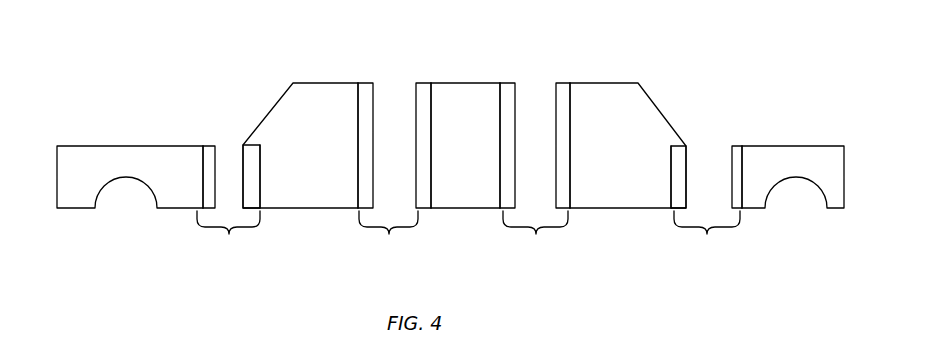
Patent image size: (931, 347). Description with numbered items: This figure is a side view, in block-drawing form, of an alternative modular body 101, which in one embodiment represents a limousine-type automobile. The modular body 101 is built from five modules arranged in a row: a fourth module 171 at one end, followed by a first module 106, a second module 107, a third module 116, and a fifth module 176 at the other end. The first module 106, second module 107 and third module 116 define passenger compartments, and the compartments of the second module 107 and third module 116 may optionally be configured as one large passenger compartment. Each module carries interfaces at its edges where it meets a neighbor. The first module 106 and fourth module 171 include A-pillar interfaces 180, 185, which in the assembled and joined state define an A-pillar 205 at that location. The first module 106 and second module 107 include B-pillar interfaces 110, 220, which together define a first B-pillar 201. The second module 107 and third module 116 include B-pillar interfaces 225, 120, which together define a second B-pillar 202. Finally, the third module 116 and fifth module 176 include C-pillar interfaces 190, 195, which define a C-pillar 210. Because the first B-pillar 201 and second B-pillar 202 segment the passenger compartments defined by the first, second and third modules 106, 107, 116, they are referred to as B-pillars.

The alternative modular body 101 is at (730, 35).
The fourth module 171 is at (137, 135).
The A-pillar interface 185 is at (203, 172).
The first module 106 is at (332, 76).
The B-pillar interface 110 is at (358, 125).
The A-pillar interface 180 is at (262, 170).
The second module 107 is at (464, 76).
The B-pillar interface 220 is at (431, 114).
The B-pillar interface 225 is at (500, 163).
The third module 116 is at (601, 76).
The B-pillar interface 120 is at (570, 128).
The C-pillar interface 190 is at (669, 176).
The fifth module 176 is at (779, 134).
The C-pillar interface 195 is at (743, 175).
The A-pillar 205 is at (228, 239).
The first B-pillar 201 is at (388, 238).
The second B-pillar 202 is at (535, 238).
The C-pillar 210 is at (707, 238).